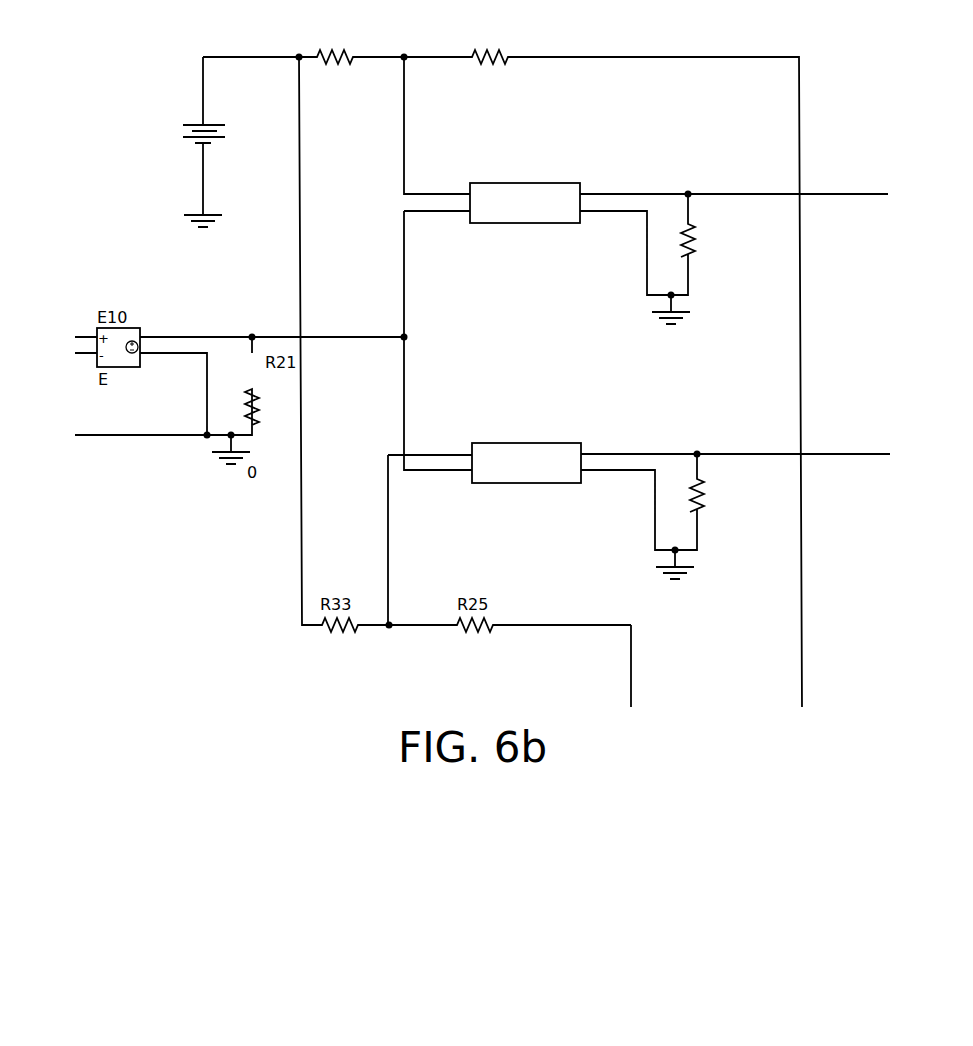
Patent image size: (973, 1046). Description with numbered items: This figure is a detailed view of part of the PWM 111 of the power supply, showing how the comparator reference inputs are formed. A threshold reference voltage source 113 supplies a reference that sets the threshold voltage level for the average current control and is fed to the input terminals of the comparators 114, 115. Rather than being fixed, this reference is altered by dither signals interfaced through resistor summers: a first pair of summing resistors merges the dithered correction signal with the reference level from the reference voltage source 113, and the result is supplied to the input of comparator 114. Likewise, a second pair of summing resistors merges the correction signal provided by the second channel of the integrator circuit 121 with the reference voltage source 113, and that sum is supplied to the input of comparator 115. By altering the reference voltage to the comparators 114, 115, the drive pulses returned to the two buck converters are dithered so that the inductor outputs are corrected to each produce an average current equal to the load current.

The PWM 111 is at (879, 93).
The threshold reference voltage source 113 is at (193, 108).
The comparator 114 is at (575, 183).
The comparator 115 is at (577, 443).
The integrator circuit 121 is at (715, 712).